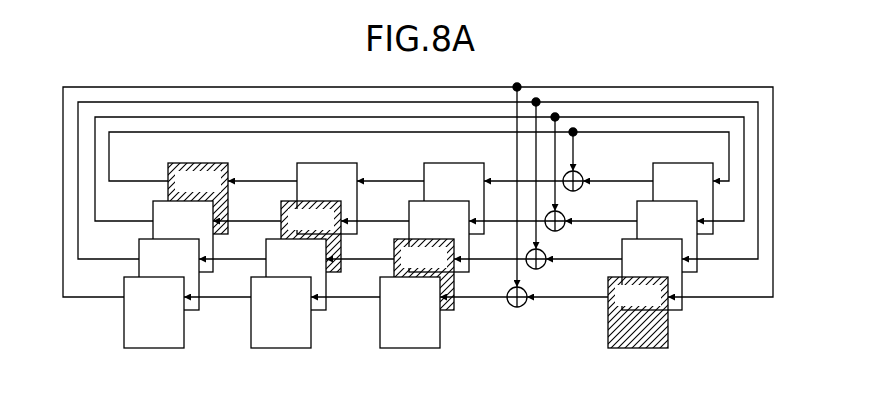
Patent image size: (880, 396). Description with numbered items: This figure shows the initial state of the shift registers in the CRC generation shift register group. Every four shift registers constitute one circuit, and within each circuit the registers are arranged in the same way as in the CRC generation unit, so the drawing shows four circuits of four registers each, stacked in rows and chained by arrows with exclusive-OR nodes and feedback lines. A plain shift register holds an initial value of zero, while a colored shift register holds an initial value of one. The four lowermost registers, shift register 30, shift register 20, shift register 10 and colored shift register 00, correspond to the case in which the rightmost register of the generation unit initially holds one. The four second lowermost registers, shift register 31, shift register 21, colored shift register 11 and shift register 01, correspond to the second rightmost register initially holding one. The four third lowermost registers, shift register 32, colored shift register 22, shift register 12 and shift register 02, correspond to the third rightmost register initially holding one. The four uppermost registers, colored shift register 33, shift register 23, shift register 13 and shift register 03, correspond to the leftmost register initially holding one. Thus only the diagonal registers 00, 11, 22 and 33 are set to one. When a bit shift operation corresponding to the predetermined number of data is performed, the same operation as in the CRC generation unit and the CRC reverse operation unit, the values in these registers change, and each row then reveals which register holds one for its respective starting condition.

The shift register (3, 3) 33 is at (198, 198).
The shift register (2, 3) 23 is at (327, 198).
The shift register (1, 3) 13 is at (454, 198).
The shift register (0, 3) 03 is at (683, 198).
The shift register (3, 2) 32 is at (183, 236).
The shift register (2, 2) 22 is at (311, 236).
The shift register (1, 2) 12 is at (439, 236).
The shift register (0, 2) 02 is at (667, 236).
The shift register (3, 1) 31 is at (169, 274).
The shift register (2, 1) 21 is at (296, 274).
The shift register (1, 1) 11 is at (424, 274).
The shift register (0, 1) 01 is at (652, 274).
The shift register (3, 0) 30 is at (154, 312).
The shift register (2, 0) 20 is at (281, 312).
The shift register (1, 0) 10 is at (410, 312).
The shift register (0, 0) 00 is at (638, 312).